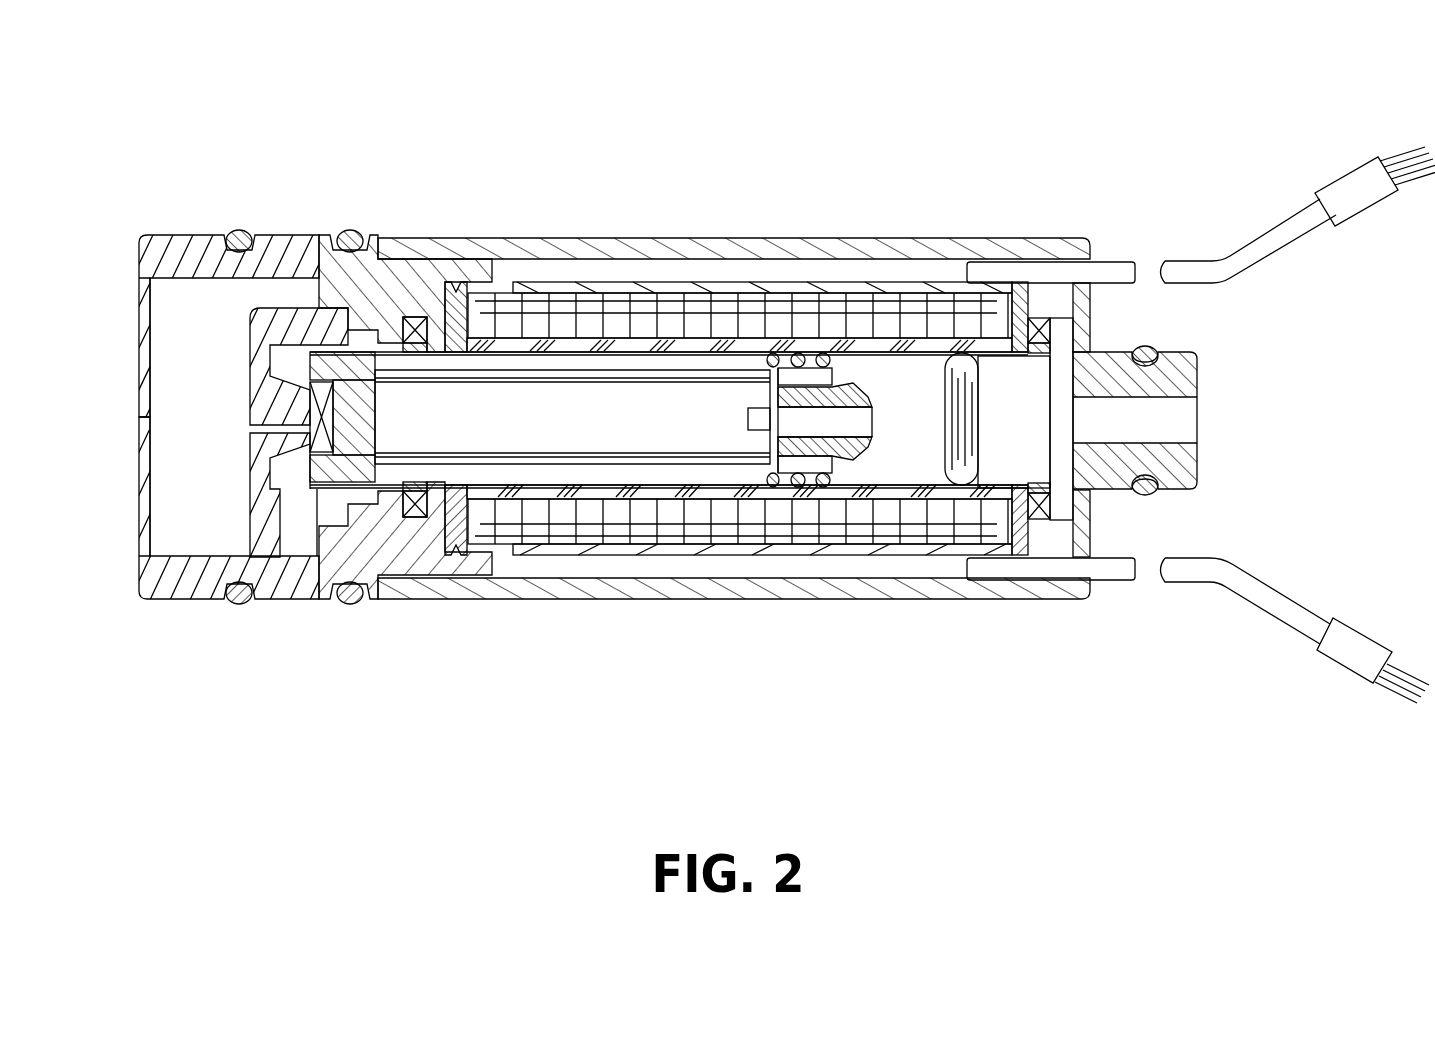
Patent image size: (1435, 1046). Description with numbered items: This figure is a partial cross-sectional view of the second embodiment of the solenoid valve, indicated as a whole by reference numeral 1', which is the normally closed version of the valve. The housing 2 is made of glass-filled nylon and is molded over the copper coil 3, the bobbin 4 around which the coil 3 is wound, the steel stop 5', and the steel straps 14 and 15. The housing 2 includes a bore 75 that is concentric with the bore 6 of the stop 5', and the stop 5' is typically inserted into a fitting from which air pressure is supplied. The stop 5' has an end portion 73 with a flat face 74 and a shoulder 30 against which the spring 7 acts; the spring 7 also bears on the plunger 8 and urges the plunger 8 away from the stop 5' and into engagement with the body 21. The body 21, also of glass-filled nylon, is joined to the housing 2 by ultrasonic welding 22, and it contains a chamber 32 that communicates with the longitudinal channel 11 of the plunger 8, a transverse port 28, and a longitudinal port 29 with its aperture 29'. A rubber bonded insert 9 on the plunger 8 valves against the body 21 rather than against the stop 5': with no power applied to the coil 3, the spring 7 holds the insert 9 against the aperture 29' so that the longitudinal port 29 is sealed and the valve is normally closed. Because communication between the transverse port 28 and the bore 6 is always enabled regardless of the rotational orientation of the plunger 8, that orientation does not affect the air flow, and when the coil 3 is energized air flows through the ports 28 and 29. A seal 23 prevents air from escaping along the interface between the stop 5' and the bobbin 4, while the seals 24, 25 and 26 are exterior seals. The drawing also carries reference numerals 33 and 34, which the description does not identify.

The second embodiment of the invention 1' is at (734, 342).
The housing 2 is at (578, 252).
The coil 3 is at (880, 310).
The bobbin 4 is at (455, 290).
The stop 5' is at (1089, 320).
The bore 6 is at (835, 400).
The spring 7 is at (862, 330).
The plunger 8 is at (565, 428).
The rubber bonded insert 9 is at (326, 600).
The longitudinal channel 11 is at (627, 383).
The strap 14 is at (1040, 507).
The strap 15 is at (1000, 572).
The body 21 is at (271, 262).
The ultrasonic welding 22 is at (410, 300).
The seal 23 is at (960, 482).
The seal 24 is at (1146, 492).
The seal 25 is at (347, 600).
The seal 26 is at (250, 487).
The transverse port 28 is at (300, 610).
The longitudinal port 29 is at (147, 474).
The aperture 29' is at (212, 590).
The shoulder 30 is at (828, 452).
The chamber 32 is at (292, 360).
The plug 33 is at (1012, 400).
The end wall 34 is at (995, 580).
The end portion 73 is at (800, 378).
The flat face 74 is at (767, 377).
The bore 75 is at (1105, 398).